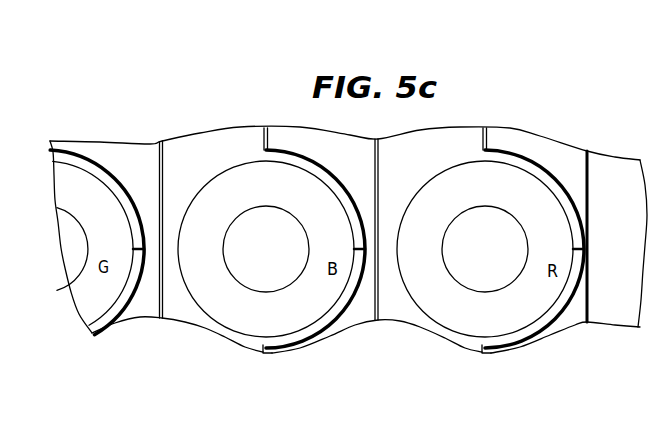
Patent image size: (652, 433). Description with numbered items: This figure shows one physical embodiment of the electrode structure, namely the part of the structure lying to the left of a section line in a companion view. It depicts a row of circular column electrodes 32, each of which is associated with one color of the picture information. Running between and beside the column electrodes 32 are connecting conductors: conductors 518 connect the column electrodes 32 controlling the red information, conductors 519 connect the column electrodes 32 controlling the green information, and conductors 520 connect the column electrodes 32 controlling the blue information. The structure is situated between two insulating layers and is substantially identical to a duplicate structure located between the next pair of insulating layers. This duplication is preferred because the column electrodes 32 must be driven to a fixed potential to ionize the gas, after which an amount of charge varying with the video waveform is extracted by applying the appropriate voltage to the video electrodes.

The column electrode 32 is at (184, 200).
The conductor 518 is at (168, 227).
The conductor 519 is at (384, 226).
The conductor 520 is at (595, 226).